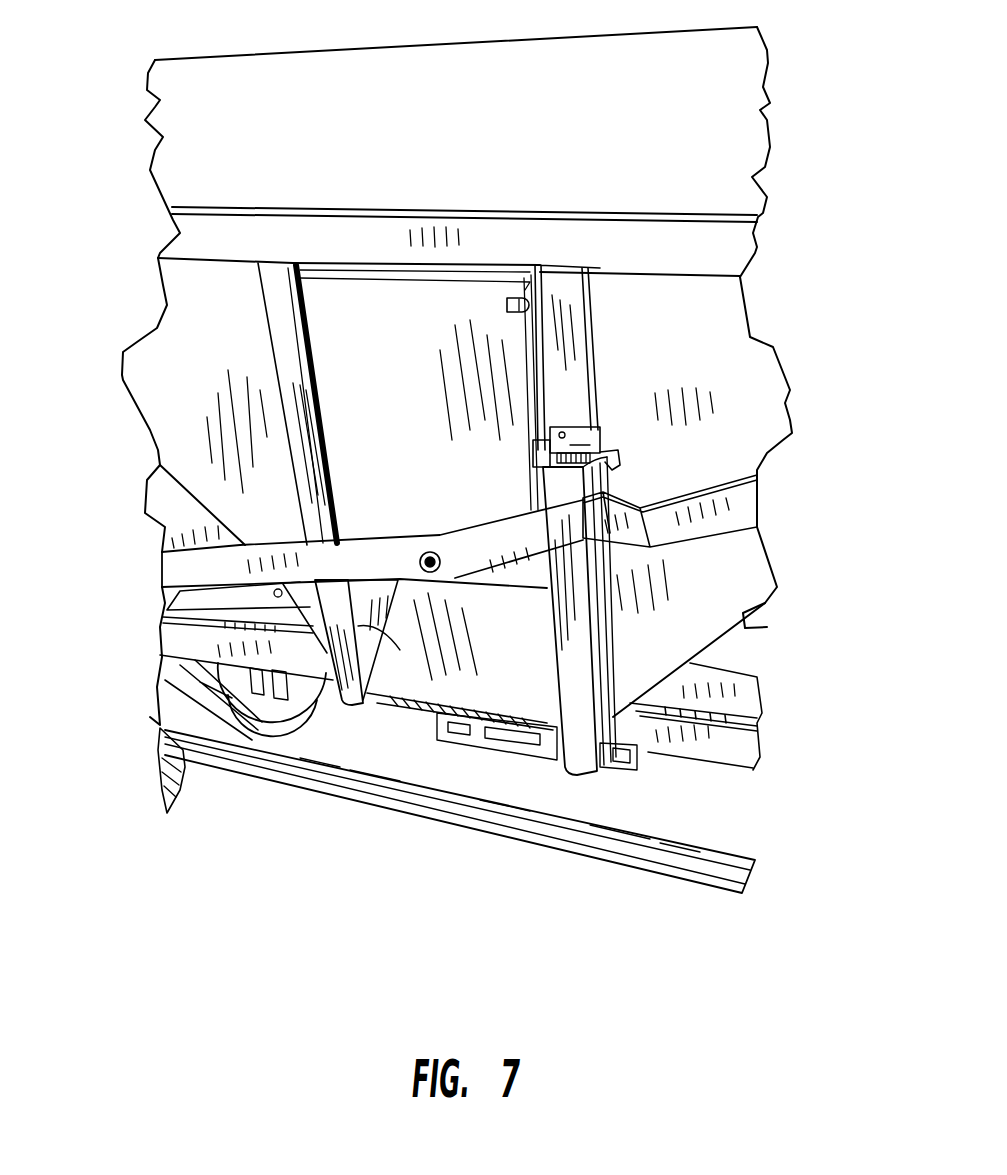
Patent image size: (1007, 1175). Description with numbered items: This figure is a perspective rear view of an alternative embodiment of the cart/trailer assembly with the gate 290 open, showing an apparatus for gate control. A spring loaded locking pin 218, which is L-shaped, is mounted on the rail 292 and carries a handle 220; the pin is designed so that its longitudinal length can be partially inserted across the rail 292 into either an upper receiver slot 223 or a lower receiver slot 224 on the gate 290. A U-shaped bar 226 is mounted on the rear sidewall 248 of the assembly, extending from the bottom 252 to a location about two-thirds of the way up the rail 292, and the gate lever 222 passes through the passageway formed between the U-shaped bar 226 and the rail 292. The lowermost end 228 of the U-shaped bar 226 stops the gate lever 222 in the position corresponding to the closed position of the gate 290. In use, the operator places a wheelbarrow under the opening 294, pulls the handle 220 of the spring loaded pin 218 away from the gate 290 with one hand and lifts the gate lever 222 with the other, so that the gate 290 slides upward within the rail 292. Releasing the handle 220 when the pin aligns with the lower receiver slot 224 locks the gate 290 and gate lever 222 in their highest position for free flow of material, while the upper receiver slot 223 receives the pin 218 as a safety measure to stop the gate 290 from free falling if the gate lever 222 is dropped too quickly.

The spring loaded locking pin 218 is at (606, 418).
The handle 220 is at (665, 457).
The gate lever 222 is at (743, 505).
The upper receiver slot 223 is at (535, 276).
The lower receiver slot 224 is at (541, 412).
The U-shaped bar 226 is at (565, 687).
The lowermost end 228 is at (650, 755).
The rear sidewall 248 is at (202, 368).
The bottom 252 is at (230, 745).
The gate 290 is at (377, 360).
The rail 292 is at (570, 373).
The opening 294 is at (205, 611).